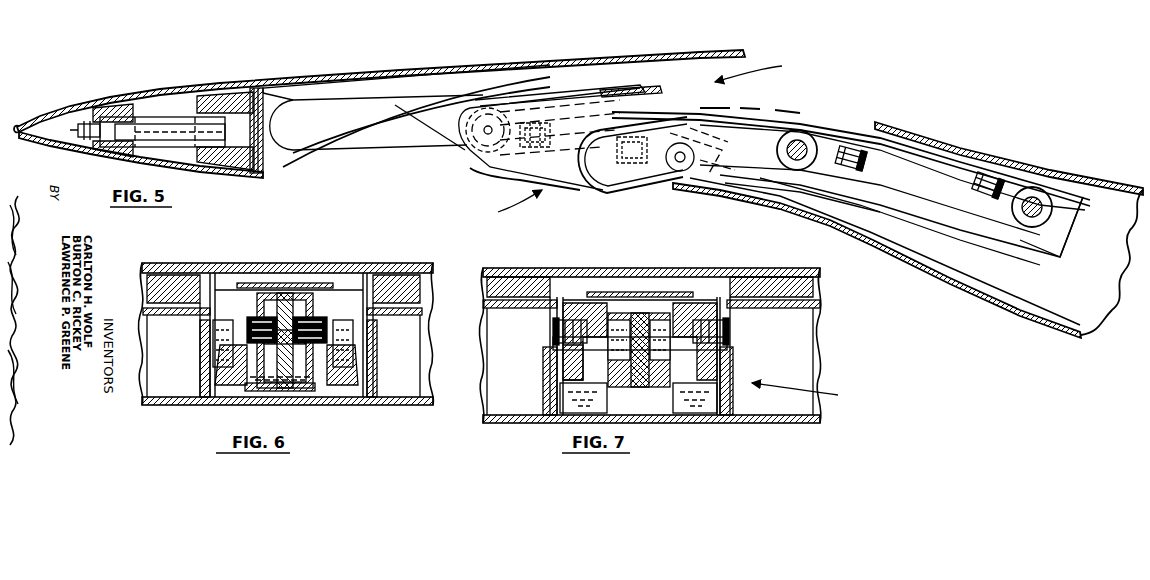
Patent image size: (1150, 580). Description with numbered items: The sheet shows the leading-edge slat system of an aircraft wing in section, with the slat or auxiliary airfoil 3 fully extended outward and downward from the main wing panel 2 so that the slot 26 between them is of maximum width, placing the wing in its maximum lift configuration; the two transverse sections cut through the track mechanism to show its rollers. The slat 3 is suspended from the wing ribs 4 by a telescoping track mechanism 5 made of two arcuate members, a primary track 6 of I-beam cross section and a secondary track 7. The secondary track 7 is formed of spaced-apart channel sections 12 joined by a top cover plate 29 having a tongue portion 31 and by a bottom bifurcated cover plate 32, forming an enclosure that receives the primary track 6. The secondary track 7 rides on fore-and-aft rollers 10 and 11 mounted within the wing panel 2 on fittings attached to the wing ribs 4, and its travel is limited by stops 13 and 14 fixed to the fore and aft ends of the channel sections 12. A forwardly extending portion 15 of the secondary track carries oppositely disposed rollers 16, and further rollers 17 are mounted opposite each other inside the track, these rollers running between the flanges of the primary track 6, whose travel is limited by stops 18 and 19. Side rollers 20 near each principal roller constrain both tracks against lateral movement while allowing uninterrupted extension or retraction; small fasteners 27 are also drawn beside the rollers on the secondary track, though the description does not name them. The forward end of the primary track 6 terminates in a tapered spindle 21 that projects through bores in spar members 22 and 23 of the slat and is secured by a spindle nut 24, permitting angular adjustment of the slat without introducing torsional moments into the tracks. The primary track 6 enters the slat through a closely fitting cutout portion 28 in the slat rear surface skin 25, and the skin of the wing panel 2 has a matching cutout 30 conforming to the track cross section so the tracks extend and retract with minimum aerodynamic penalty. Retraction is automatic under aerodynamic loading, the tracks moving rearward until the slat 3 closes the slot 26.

In FIG. 5, the main wing panel 2 is at (1050, 170).
In FIG. 6, the main wing panel 2 is at (155, 330).
In FIG. 7, the main wing panel 2 is at (500, 390).
In FIG. 5, the slat 3 is at (455, 72).
In FIG. 6, the slat 3 is at (172, 265).
In FIG. 7, the slat 3 is at (530, 268).
In FIG. 6, the wing ribs 4 is at (380, 373).
In FIG. 7, the wing ribs 4 is at (548, 383).
In FIG. 5, the telescoping track mechanism 5 is at (512, 205).
In FIG. 7, the telescoping track mechanism 5 is at (800, 393).
In FIG. 5, the primary track 6 is at (380, 130).
In FIG. 6, the primary track 6 is at (292, 290).
In FIG. 7, the primary track 6 is at (636, 312).
In FIG. 5, the secondary track 7 is at (915, 195).
In FIG. 6, the secondary track 7 is at (362, 390).
In FIG. 7, the secondary track 7 is at (544, 362).
In FIG. 5, the fore-and-aft rollers 10 is at (782, 147).
In FIG. 6, the fore-and-aft rollers 10 is at (212, 342).
In FIG. 5, the fore-and-aft rollers 11 is at (1040, 218).
In FIG. 5, the channel sections 12 is at (858, 190).
In FIG. 5, the stop 13 is at (598, 180).
In FIG. 5, the stop 14 is at (1065, 213).
In FIG. 5, the forwardly extending portion 15 is at (588, 125).
In FIG. 5, the rollers 16 is at (478, 144).
In FIG. 5, the rollers 17 is at (684, 172).
In FIG. 7, the rollers 17 is at (616, 328).
In FIG. 5, the stop 18 is at (285, 105).
In FIG. 5, the stop 19 is at (715, 148).
In FIG. 5, the side rollers 20 is at (545, 125).
In FIG. 6, the side rollers 20 is at (318, 320).
In FIG. 5, the tapered spindle 21 is at (182, 128).
In FIG. 5, the spar member 22 is at (113, 106).
In FIG. 5, the spar member 23 is at (225, 95).
In FIG. 5, the spindle nut 24 is at (77, 130).
In FIG. 5, the rear surface skin 25 is at (258, 168).
In FIG. 5, the slot 26 is at (755, 67).
In FIG. 5, the nut 27 is at (866, 157).
In FIG. 7, the nut 27 is at (556, 331).
In FIG. 5, the cutout portion 28 is at (492, 94).
In FIG. 7, the cutout portion 28 is at (575, 372).
In FIG. 5, the top cover plate 29 is at (760, 114).
In FIG. 6, the top cover plate 29 is at (232, 280).
In FIG. 7, the top cover plate 29 is at (578, 290).
In FIG. 5, the cutout 30 is at (780, 198).
In FIG. 5, the tongue portion 31 is at (640, 104).
In FIG. 6, the tongue portion 31 is at (278, 290).
In FIG. 7, the tongue portion 31 is at (650, 300).
In FIG. 5, the bottom bifurcated cover plate 32 is at (805, 190).
In FIG. 6, the bottom bifurcated cover plate 32 is at (318, 390).
In FIG. 7, the bottom bifurcated cover plate 32 is at (638, 398).